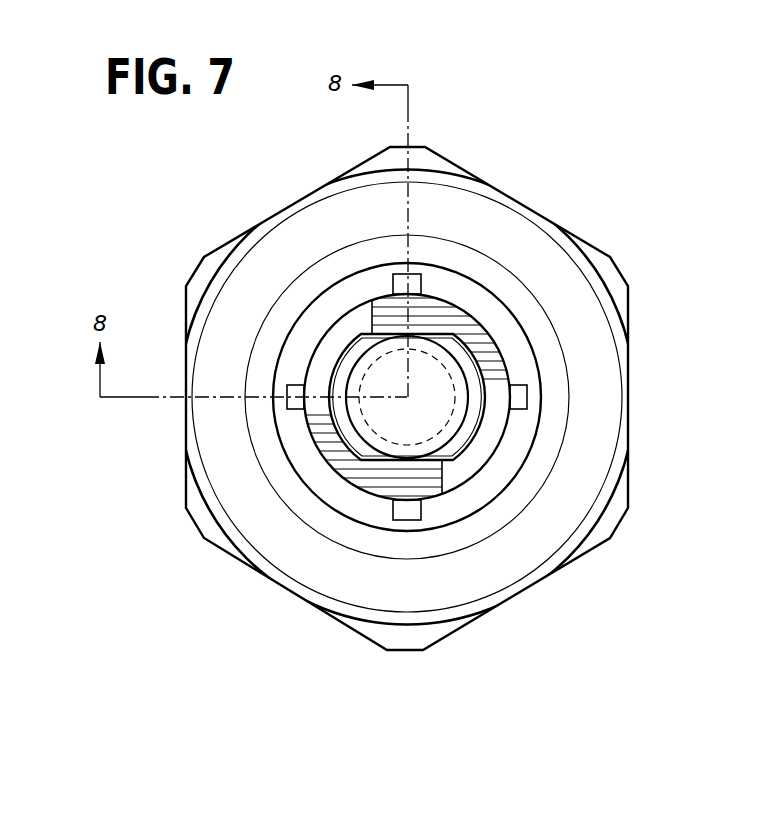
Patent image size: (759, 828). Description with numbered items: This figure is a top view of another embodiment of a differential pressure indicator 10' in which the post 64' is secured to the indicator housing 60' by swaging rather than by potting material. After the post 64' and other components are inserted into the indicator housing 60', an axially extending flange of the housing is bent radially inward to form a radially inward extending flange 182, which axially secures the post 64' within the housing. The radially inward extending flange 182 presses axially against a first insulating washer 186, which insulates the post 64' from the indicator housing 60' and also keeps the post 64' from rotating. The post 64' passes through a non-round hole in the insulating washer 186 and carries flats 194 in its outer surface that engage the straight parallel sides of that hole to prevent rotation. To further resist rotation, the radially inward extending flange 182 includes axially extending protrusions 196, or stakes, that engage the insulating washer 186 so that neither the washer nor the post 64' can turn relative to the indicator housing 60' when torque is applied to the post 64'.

The differential pressure indicator 10' is at (384, 427).
The indicator housing 60' is at (441, 398).
The post 64' is at (530, 410).
The radially inward extending flange 182 is at (448, 285).
The insulating washer 186 is at (407, 480).
The flats 194 is at (372, 300).
The axially extending protrusions 196 is at (407, 512).